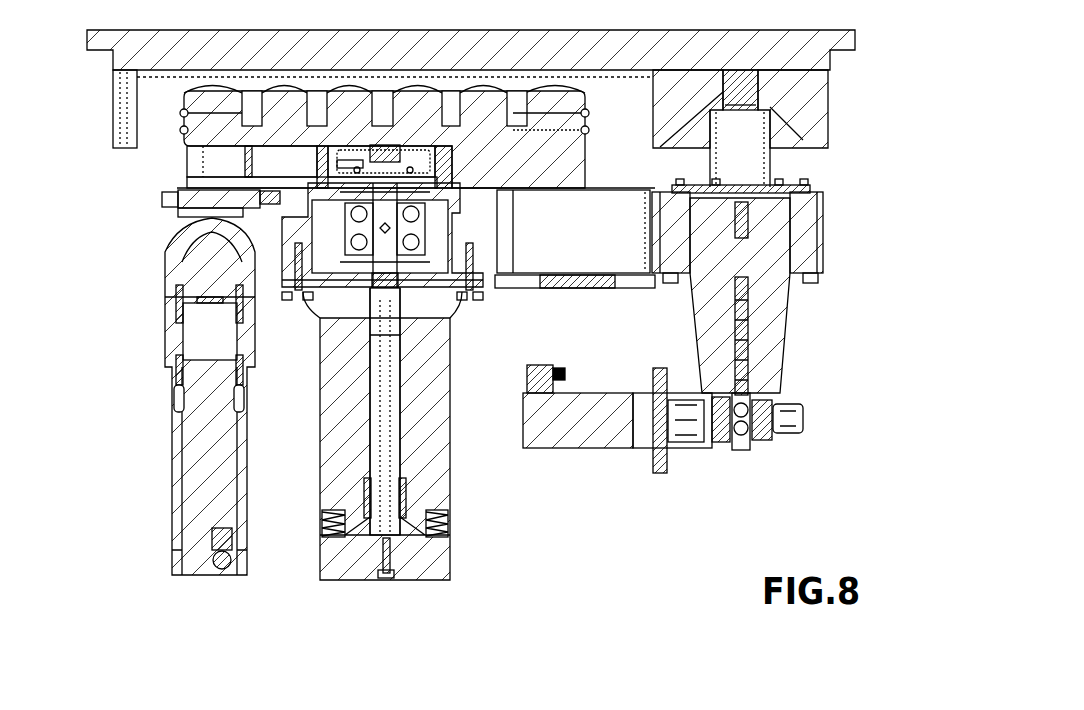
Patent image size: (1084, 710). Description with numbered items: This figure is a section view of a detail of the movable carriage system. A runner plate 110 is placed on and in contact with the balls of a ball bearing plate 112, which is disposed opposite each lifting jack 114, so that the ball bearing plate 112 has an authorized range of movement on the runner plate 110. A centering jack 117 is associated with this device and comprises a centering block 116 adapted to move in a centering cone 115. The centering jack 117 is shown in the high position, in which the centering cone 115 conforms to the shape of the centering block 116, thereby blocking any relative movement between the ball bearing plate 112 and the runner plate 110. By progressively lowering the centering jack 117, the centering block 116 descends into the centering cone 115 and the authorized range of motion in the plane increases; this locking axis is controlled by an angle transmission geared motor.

The runner plate 110 is at (150, 78).
The ball bearing plate 112 is at (185, 128).
The lifting jack 114 is at (390, 428).
The centering cone 115 is at (805, 105).
The centering block 116 is at (745, 100).
The centering jack 117 is at (778, 166).